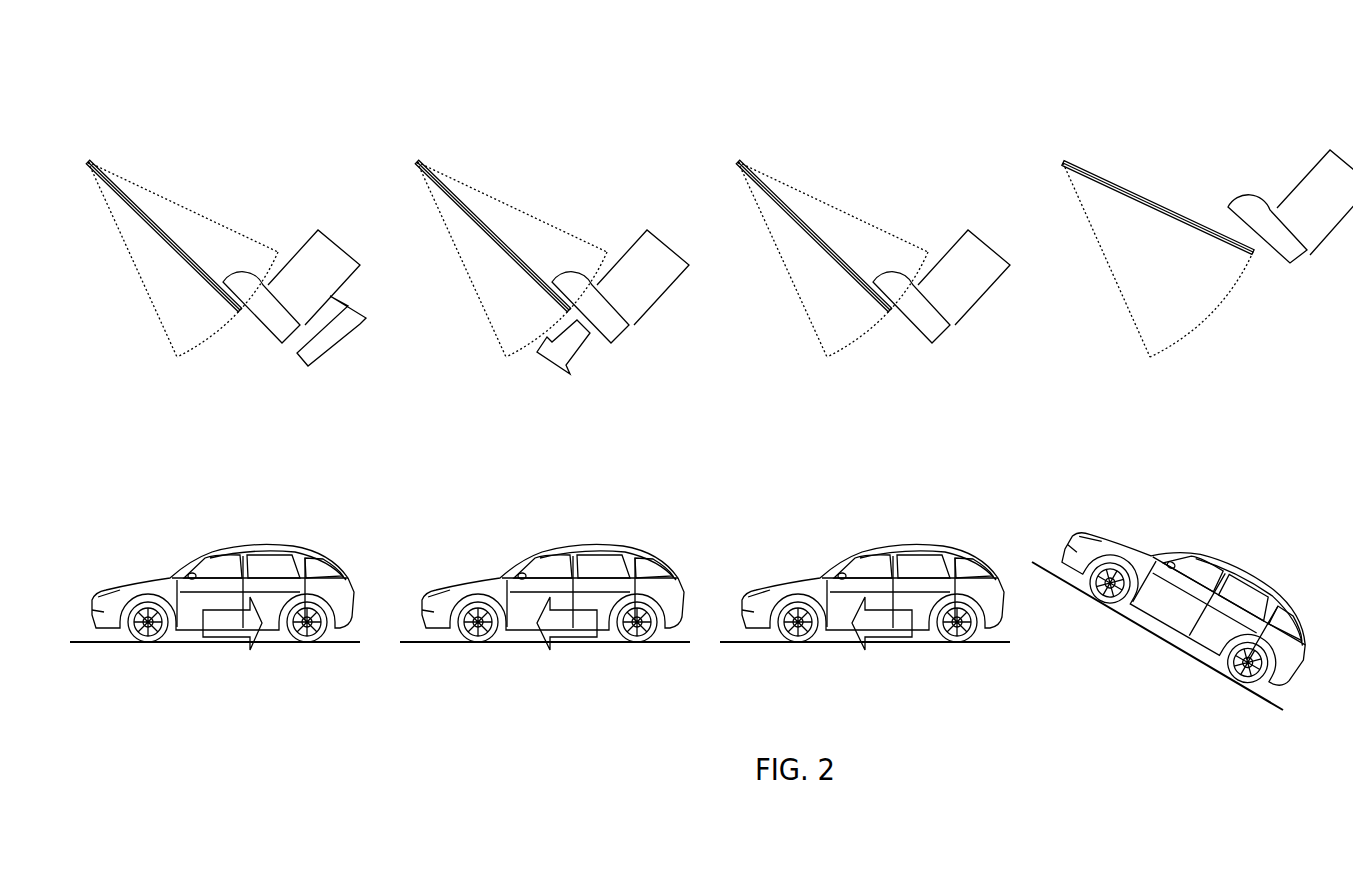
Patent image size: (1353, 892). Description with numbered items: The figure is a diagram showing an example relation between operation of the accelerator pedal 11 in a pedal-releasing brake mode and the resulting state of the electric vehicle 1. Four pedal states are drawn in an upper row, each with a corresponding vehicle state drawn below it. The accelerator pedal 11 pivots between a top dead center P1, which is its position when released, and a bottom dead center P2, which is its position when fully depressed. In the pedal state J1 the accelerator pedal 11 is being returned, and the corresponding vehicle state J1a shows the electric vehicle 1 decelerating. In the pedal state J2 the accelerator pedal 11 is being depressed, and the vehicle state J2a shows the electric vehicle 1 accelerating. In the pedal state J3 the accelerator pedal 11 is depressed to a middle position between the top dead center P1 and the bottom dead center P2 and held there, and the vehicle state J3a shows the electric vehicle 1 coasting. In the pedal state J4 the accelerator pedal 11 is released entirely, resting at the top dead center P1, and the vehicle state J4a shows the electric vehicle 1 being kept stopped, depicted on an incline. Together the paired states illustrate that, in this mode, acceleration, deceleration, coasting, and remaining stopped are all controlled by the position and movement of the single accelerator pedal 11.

The accelerator pedal 11 is at (143, 227).
The top dead center P1 is at (183, 207).
The bottom dead center P2 is at (153, 300).
The pedal operation of returning the accelerator pedal J1 is at (244, 126).
The pedal operation of depressing the accelerator pedal J2 is at (574, 126).
The pedal operation of holding the accelerator pedal at a middle position J3 is at (894, 126).
The pedal operation of releasing the accelerator pedal J4 is at (1216, 126).
The electric vehicle 1 is at (265, 546).
The decelerating state of the electric vehicle J1a is at (306, 487).
The accelerating state of the electric vehicle J2a is at (636, 487).
The coasting state of the electric vehicle J3a is at (956, 487).
The stopped state of the electric vehicle J4a is at (1281, 487).